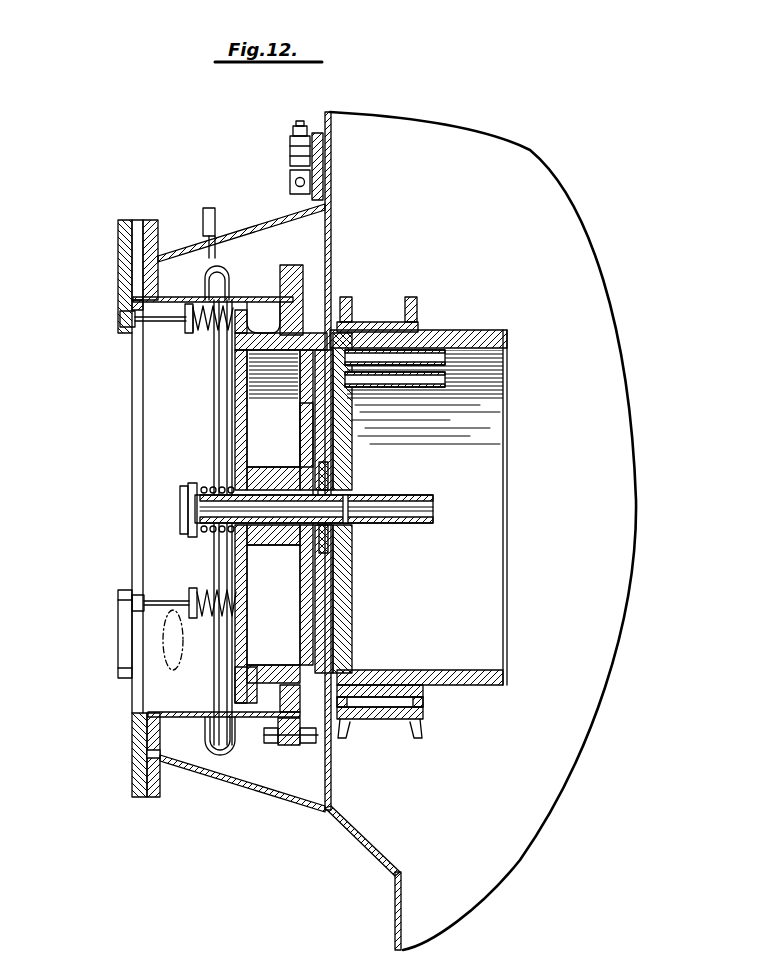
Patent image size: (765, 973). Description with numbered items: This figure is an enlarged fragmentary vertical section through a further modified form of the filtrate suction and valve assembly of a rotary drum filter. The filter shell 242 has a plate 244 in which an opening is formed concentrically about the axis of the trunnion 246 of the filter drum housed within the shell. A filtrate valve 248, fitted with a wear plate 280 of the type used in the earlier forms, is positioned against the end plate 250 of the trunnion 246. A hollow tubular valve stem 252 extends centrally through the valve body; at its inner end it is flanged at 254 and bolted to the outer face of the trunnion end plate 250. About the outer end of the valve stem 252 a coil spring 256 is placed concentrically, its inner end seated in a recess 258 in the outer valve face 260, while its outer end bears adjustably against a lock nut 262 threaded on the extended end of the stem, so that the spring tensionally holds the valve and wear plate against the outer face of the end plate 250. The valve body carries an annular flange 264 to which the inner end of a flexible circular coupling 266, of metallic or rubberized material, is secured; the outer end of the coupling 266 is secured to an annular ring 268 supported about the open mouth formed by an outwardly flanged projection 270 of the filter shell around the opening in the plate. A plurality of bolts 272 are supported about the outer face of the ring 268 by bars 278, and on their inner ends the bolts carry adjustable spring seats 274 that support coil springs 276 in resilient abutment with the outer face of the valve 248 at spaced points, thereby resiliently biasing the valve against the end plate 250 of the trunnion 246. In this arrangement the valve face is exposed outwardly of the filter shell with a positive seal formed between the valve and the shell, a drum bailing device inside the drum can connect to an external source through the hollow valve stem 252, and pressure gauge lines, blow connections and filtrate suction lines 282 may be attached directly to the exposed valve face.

The filter shell 242 is at (401, 876).
The plate 244 is at (333, 750).
The trunnion 246 is at (399, 672).
The filtrate valve 248 is at (236, 572).
The end plate 250 is at (352, 596).
The hollow tubular valve stem 252 is at (205, 532).
The flange 254 is at (327, 478).
The coil spring 256 is at (203, 482).
The recess 258 is at (244, 488).
The outer valve face 260 is at (292, 406).
The lock nut 262 is at (181, 498).
The annular flange 264 is at (303, 290).
The flexible circular coupling 266 is at (232, 284).
The annular ring 268 is at (140, 220).
The outwardly flanged projection 270 is at (186, 250).
The bolts 272 is at (172, 322).
The adjustable spring seats 274 is at (202, 306).
The coil springs 276 is at (200, 334).
The bars 278 is at (118, 233).
The wear plate 280 is at (321, 636).
The filtrate suction lines 282 is at (235, 668).